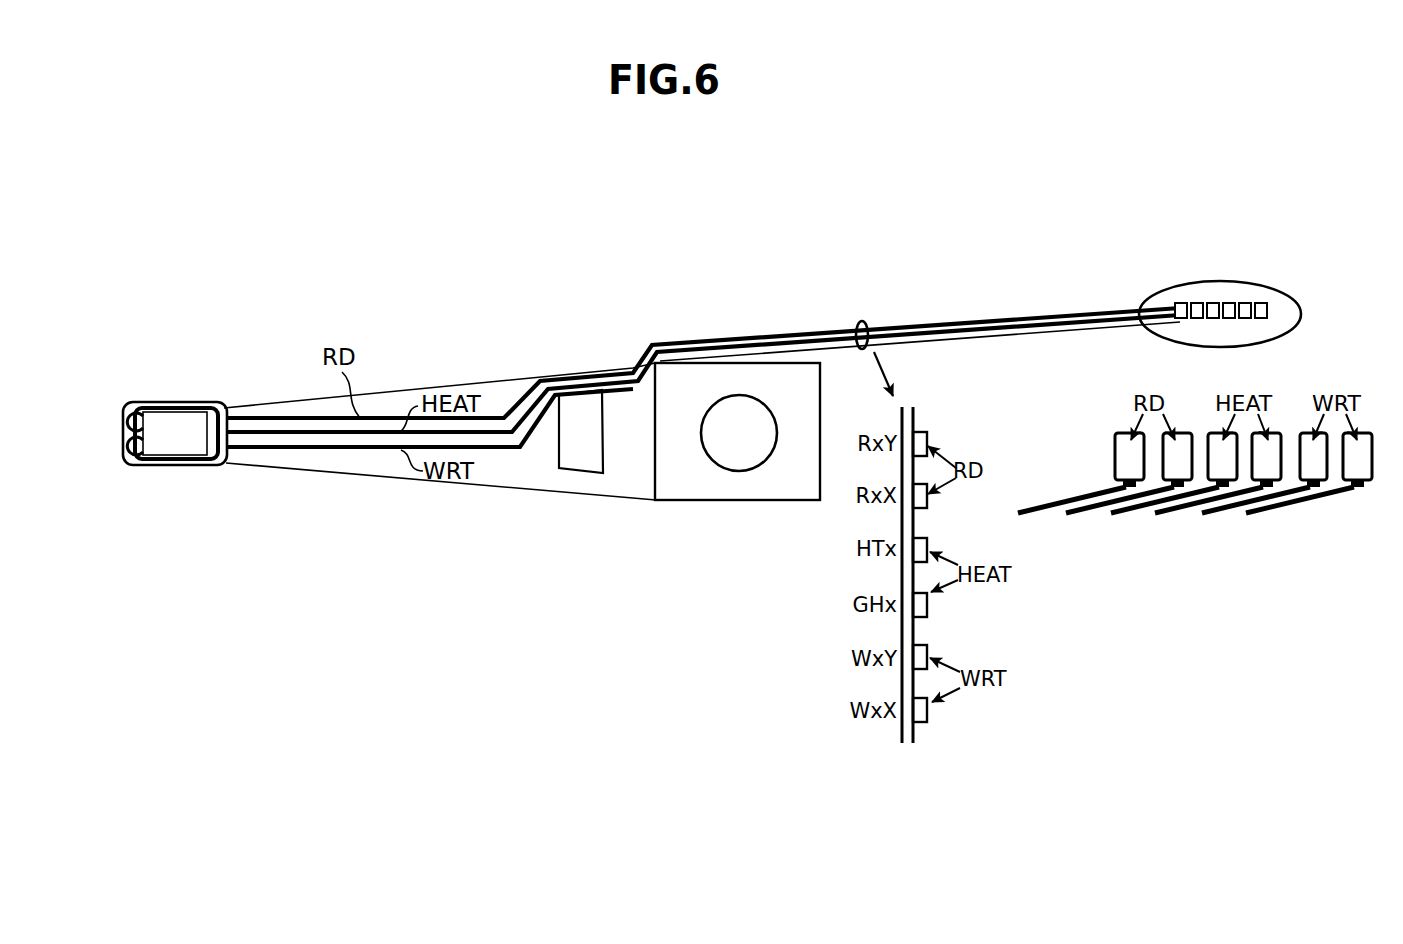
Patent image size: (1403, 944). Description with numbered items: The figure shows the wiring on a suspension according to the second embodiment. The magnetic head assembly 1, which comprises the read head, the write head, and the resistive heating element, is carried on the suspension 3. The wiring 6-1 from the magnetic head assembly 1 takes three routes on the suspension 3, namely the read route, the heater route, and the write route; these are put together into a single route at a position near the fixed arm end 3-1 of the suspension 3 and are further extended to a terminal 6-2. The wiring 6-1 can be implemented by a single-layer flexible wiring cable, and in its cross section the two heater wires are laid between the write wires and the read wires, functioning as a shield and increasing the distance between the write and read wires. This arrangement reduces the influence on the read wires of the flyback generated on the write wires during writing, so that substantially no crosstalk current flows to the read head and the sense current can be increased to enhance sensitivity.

The magnetic head assembly 1 is at (190, 448).
The suspension 3 is at (541, 478).
The fixed arm end 3-1 is at (684, 488).
The wiring 6-1 is at (870, 328).
The terminal 6-2 is at (1150, 296).